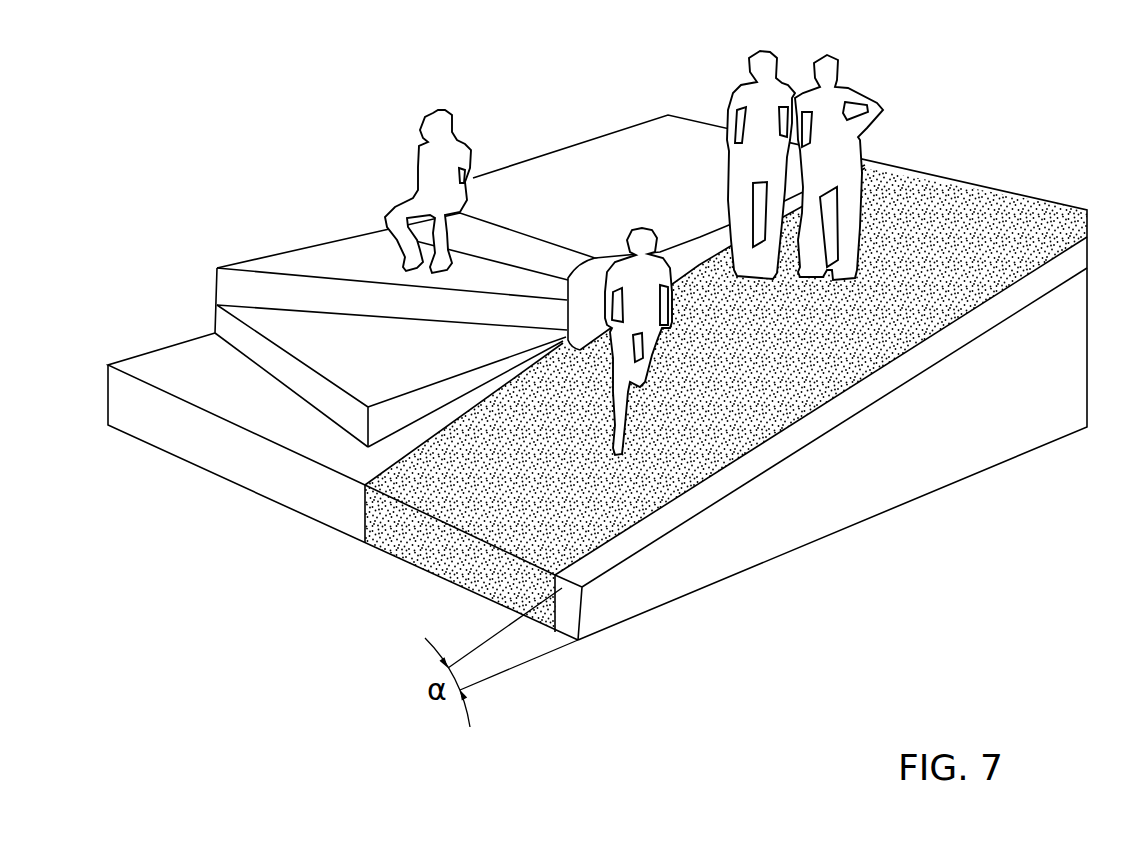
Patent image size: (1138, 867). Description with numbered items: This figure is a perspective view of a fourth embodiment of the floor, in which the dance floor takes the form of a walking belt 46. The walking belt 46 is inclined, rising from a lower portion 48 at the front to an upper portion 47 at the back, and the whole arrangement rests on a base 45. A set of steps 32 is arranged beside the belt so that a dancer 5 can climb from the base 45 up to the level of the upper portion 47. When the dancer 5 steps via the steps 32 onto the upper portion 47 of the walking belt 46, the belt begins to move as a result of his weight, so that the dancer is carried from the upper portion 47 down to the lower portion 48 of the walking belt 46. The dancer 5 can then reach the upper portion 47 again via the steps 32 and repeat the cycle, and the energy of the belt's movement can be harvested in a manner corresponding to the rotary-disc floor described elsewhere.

The dancer 5 is at (737, 92).
The steps 32 is at (292, 262).
The base 45 is at (188, 462).
The walking belt 46 is at (943, 177).
The upper portion of the walking belt 47 is at (1030, 183).
The lower portion of the walking belt 48 is at (415, 553).